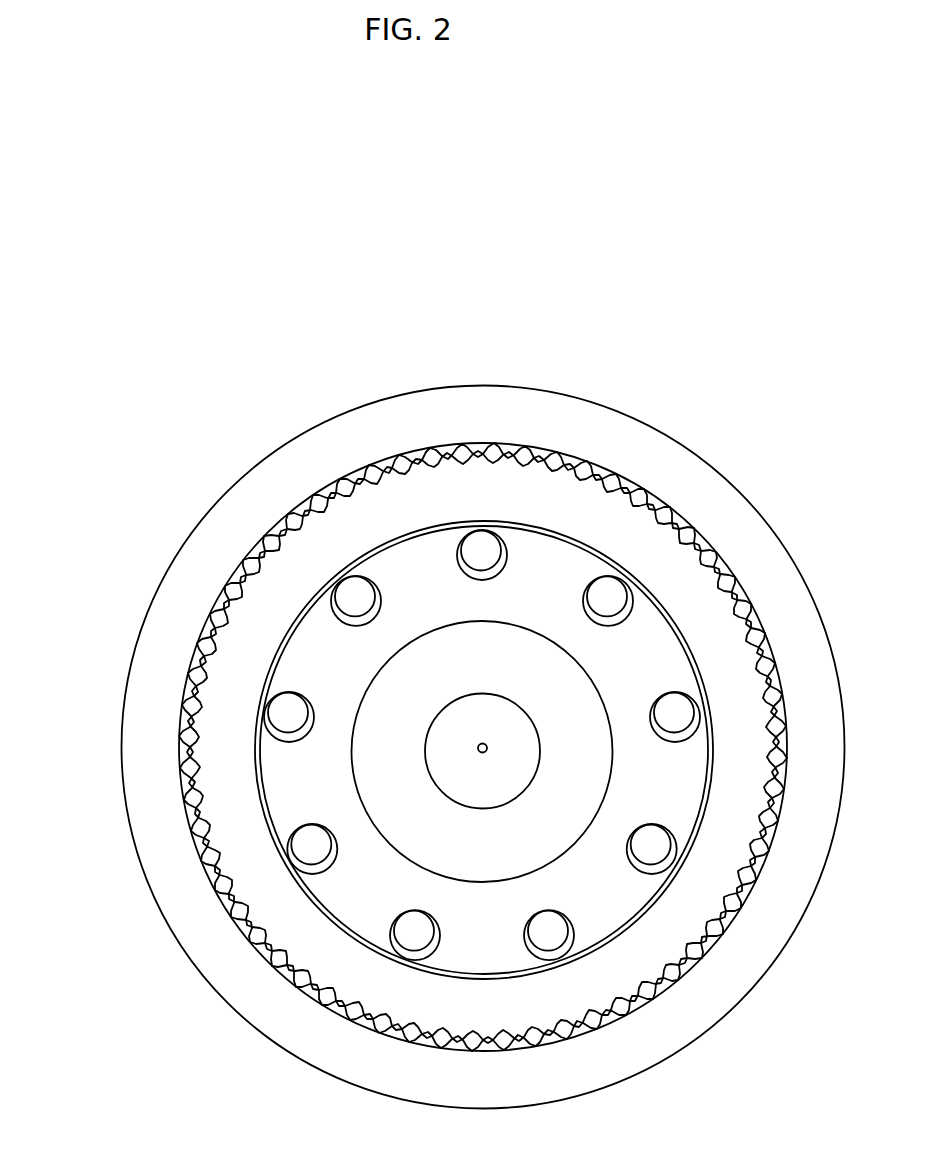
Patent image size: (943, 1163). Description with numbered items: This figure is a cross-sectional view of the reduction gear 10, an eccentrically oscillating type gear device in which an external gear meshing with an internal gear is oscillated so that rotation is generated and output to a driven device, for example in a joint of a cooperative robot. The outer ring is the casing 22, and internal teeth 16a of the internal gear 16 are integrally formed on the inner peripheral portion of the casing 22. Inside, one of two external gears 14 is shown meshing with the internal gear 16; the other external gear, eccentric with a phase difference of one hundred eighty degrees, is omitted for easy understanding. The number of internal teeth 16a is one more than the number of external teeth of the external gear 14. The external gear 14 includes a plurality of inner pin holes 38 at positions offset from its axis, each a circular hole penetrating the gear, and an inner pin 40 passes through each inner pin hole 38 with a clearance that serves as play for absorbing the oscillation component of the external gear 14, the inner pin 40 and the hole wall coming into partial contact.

The reduction gear 10 is at (436, 710).
The external gear 14 is at (607, 518).
The internal gear 16 is at (412, 457).
The internal teeth 16a is at (520, 444).
The casing 22 is at (362, 440).
The inner pin hole 38 is at (288, 733).
The inner pin 40 is at (288, 712).